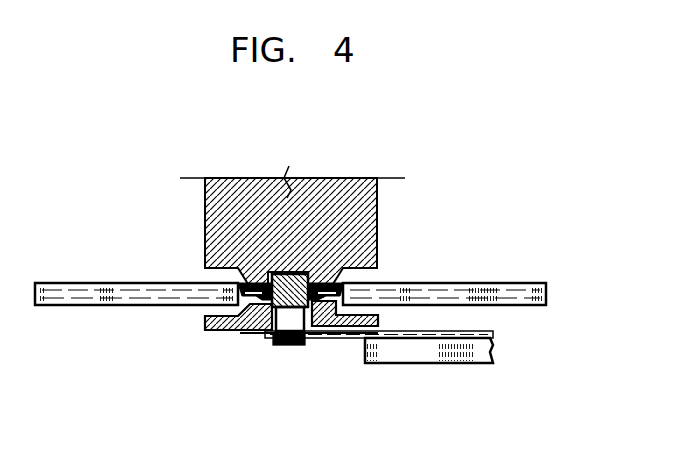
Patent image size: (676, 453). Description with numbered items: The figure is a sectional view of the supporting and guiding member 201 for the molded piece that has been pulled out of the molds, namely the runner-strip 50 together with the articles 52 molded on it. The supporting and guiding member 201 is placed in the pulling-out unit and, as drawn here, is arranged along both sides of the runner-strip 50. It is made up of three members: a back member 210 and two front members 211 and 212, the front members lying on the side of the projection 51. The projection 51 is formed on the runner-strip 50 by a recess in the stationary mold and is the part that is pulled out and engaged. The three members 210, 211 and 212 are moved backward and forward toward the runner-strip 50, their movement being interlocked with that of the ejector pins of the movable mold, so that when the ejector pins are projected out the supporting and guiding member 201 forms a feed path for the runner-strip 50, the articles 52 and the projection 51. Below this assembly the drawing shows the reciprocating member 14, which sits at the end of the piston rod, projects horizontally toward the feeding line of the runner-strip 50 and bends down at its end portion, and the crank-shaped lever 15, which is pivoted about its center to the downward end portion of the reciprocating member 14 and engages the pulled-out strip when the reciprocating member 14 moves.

The supporting and guiding member 201 is at (362, 172).
The back member 210 is at (230, 237).
The front member 212 is at (318, 298).
The article 52 is at (508, 290).
The front member 211 is at (202, 323).
The runner-strip 50 is at (258, 334).
The projection 51 is at (288, 347).
The lever 15 is at (342, 340).
The reciprocating member 14 is at (427, 363).